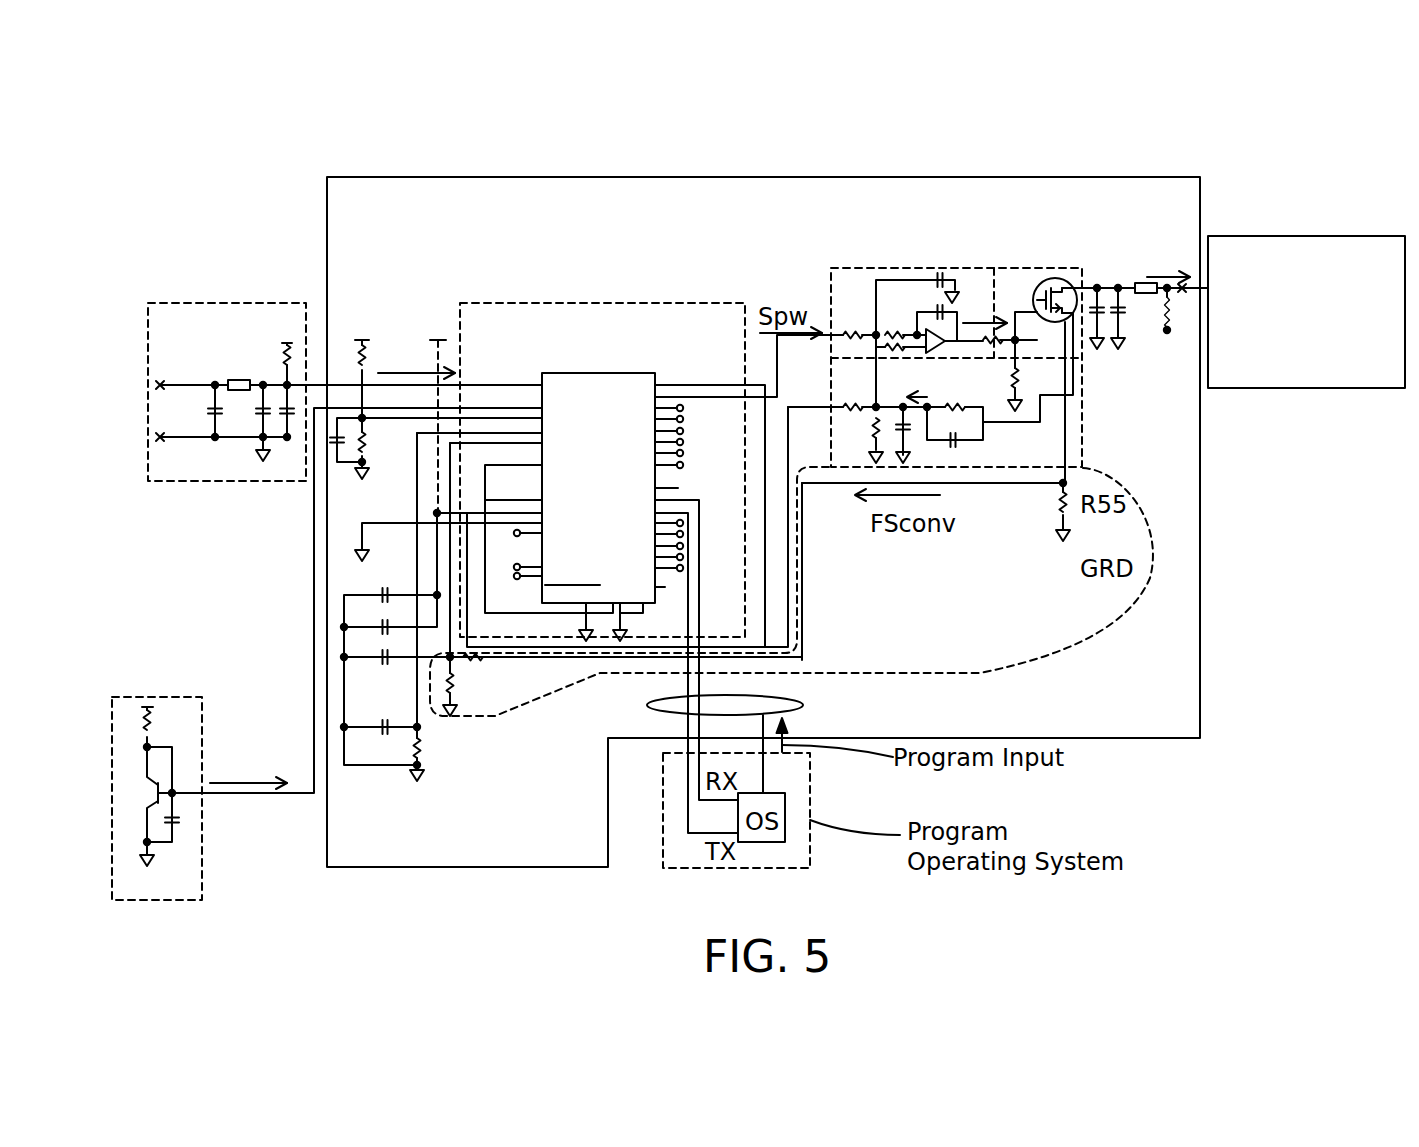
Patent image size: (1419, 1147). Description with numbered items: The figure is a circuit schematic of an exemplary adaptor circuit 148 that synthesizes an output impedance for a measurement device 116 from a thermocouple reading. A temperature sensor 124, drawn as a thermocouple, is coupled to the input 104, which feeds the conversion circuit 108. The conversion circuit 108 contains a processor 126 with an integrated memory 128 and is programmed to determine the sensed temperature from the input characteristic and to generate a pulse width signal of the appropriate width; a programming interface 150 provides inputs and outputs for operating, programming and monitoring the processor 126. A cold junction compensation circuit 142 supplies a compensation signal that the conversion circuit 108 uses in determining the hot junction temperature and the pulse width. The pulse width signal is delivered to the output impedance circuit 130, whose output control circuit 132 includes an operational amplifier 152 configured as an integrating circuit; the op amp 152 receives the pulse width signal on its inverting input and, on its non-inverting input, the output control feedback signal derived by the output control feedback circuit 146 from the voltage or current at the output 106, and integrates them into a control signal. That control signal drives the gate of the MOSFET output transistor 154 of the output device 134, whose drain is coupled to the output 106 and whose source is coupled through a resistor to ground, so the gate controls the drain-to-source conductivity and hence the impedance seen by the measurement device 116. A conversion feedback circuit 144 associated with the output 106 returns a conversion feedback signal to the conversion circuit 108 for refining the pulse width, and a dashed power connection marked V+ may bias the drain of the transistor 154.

The input 104 is at (322, 418).
The output 106 is at (1180, 290).
The conversion circuit 108 is at (600, 282).
The measurement device 116 is at (1228, 236).
The temperature sensor 124 is at (262, 300).
The processor 126 is at (637, 373).
The memory 128 is at (566, 590).
The output impedance circuit 130 is at (985, 232).
The output control circuit 132 is at (942, 252).
The output device 134 is at (1066, 257).
The cold junction compensation circuit 142 is at (188, 685).
The conversion feedback circuit 144 is at (1110, 640).
The output control feedback circuit 146 is at (1100, 430).
The adaptor circuit 148 is at (400, 172).
The programming interface 150 is at (665, 712).
The operational amplifier 152 is at (916, 334).
The MOSFET output transistor 154 is at (1072, 276).